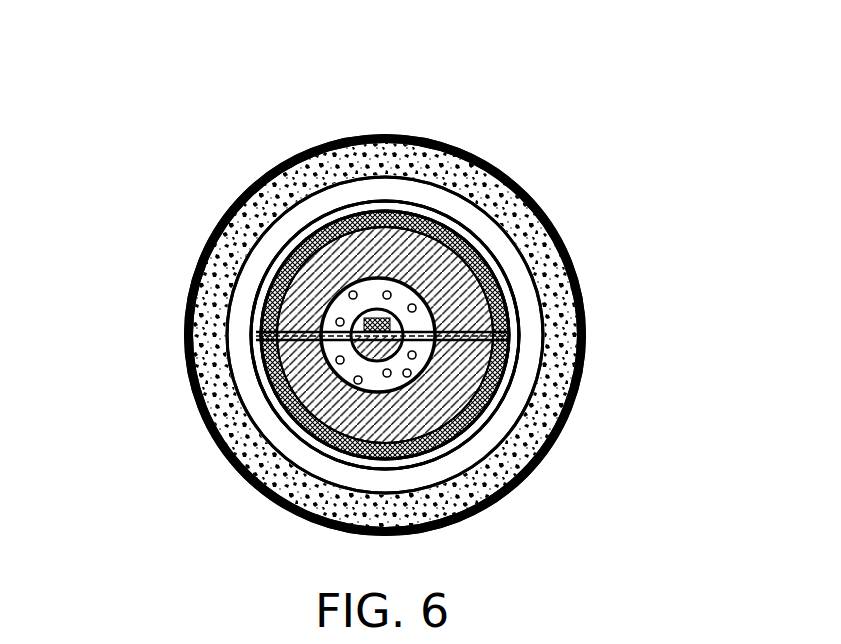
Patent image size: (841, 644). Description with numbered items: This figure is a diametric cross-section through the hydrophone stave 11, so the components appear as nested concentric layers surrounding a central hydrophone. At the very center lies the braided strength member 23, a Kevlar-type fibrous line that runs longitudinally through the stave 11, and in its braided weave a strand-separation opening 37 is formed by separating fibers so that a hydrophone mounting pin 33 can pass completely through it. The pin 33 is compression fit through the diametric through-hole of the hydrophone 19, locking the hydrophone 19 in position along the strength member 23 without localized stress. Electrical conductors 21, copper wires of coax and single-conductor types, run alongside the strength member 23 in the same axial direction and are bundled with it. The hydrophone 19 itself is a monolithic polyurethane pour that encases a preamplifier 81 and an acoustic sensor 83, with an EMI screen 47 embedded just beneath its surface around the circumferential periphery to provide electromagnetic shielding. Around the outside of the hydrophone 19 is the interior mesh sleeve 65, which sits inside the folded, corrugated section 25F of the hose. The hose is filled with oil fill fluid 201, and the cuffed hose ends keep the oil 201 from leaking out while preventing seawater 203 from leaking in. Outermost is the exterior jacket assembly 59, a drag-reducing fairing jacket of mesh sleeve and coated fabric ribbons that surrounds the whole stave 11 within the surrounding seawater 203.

The hydrophone stave 11 is at (683, 217).
The exterior jacket assembly 59 is at (513, 492).
The seawater 203 is at (563, 333).
The interior mesh sleeve 65 is at (265, 250).
The hydrophone 19 is at (257, 307).
The oil fill fluid 201 is at (455, 222).
The folded section of hose 25F is at (240, 364).
The EMI screen 47 is at (323, 438).
The preamplifier 81 is at (396, 240).
The acoustic sensor 83 is at (385, 226).
The hydrophone mounting pin 33 is at (497, 298).
The electrical conductors 21 is at (410, 380).
The strand-separation opening 37 is at (372, 312).
The braided strength member 23 is at (373, 357).